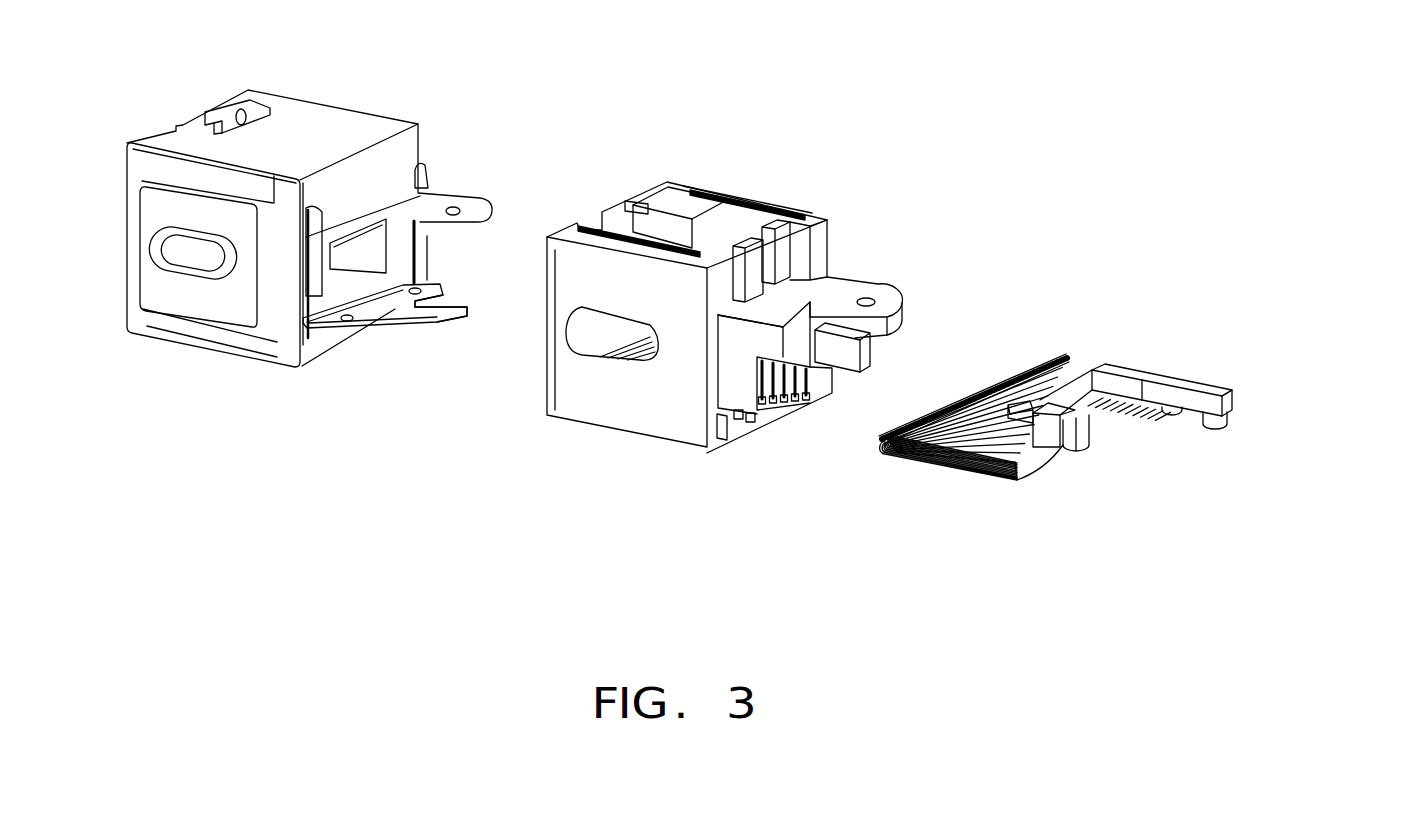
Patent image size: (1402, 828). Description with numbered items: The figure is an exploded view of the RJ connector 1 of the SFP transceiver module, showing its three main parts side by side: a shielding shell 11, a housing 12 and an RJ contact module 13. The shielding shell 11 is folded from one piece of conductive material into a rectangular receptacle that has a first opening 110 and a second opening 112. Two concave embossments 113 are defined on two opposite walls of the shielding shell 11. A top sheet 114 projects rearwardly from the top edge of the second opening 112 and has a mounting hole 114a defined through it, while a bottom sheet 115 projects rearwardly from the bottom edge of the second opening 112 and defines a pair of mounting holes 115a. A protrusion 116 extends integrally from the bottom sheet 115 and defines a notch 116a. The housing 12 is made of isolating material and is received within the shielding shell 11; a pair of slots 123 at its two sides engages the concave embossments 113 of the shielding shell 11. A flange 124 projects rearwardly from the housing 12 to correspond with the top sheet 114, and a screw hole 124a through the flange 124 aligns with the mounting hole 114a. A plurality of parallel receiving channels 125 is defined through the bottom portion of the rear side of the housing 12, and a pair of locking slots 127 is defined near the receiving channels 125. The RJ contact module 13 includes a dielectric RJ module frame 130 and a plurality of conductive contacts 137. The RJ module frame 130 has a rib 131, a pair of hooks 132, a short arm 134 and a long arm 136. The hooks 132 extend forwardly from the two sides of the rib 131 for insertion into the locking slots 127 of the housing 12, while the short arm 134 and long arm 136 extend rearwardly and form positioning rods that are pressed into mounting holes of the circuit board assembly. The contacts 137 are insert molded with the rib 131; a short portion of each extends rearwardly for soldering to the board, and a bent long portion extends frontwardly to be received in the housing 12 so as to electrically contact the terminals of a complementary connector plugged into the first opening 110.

The RJ connector 1 is at (1147, 247).
The shielding shell 11 is at (328, 95).
The first opening 110 is at (203, 112).
The second opening 112 is at (388, 247).
The concave embossments 113 is at (197, 252).
The top sheet 114 is at (431, 191).
The mounting hole 114a is at (453, 210).
The bottom sheet 115 is at (413, 288).
The mounting holes 115a is at (345, 325).
The protrusion 116 is at (433, 313).
The notch 116a is at (440, 305).
The housing 12 is at (742, 185).
The slots 123 is at (602, 330).
The flange 124 is at (856, 288).
The screw hole 124a is at (874, 302).
The receiving channels 125 is at (748, 418).
The locking slots 127 is at (724, 418).
The RJ contact module 13 is at (1045, 337).
The RJ module frame 130 is at (1392, 354).
The rib 131 is at (1112, 387).
The hooks 132 is at (1093, 368).
The short arm 134 is at (1073, 455).
The long arm 136 is at (1213, 388).
The contacts 137 is at (963, 400).